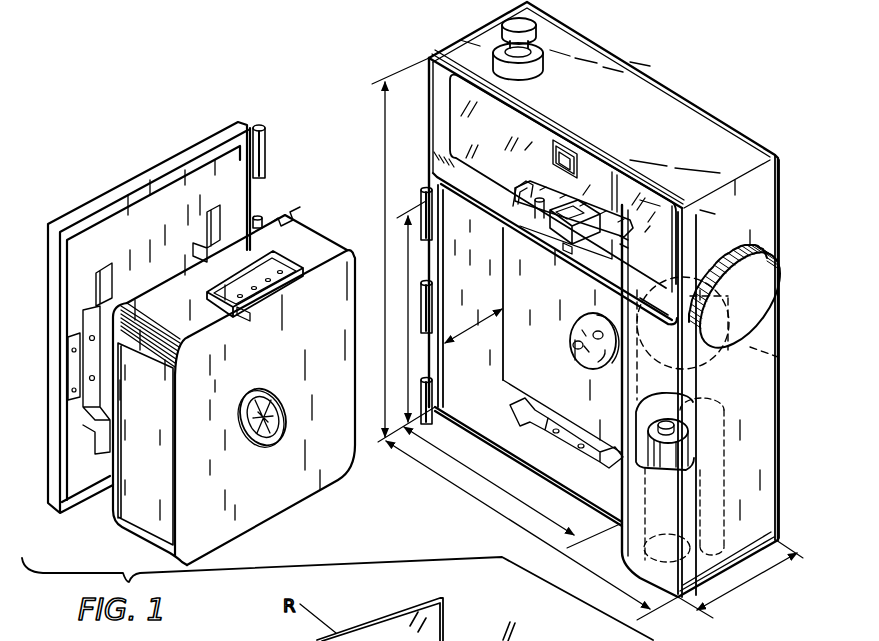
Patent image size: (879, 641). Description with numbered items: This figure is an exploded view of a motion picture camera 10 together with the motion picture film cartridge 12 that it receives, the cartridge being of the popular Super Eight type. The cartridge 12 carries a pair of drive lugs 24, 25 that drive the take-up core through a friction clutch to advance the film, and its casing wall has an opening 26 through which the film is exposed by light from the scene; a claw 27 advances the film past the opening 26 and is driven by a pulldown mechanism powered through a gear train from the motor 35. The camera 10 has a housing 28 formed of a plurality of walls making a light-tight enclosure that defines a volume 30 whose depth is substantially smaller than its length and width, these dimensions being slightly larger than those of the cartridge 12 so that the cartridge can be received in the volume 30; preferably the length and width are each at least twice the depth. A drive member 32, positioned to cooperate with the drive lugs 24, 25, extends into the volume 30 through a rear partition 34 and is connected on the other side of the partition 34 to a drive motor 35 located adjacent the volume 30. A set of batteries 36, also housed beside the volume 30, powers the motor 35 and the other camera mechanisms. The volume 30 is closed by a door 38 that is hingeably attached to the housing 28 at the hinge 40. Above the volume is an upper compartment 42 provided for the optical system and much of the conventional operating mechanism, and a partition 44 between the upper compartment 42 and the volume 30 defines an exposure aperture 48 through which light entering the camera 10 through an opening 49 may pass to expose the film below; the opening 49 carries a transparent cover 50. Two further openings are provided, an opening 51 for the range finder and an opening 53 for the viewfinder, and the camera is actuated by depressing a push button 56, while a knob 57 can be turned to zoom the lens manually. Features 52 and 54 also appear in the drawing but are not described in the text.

The motion picture camera 10 is at (680, 92).
The film cartridge 12 is at (303, 489).
The drive lug 24 is at (250, 418).
The drive lug 25 is at (274, 388).
The opening 26 is at (242, 276).
The claw 27 is at (528, 184).
The housing 28 is at (762, 393).
The volume 30 is at (549, 293).
The drive member 32 is at (572, 333).
The rear partition 34 is at (509, 262).
The drive motor 35 is at (762, 346).
The batteries 36 is at (661, 467).
The door 38 is at (143, 173).
The hinge 40 is at (424, 198).
The upper compartment 42 is at (588, 46).
The partition 44 is at (543, 197).
The exposure aperture 48 is at (579, 214).
The opening 49 is at (457, 109).
The transparent cover 50 is at (495, 139).
The opening 51 is at (566, 147).
The opening 52 is at (571, 158).
The opening 53 is at (666, 238).
The frame corner 54 is at (641, 213).
The push button 56 is at (498, 27).
The knob 57 is at (755, 298).